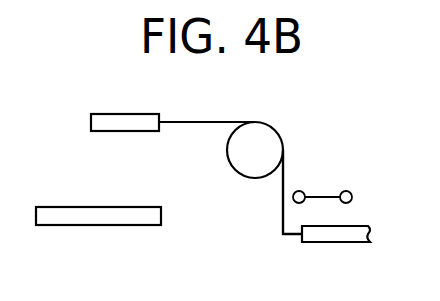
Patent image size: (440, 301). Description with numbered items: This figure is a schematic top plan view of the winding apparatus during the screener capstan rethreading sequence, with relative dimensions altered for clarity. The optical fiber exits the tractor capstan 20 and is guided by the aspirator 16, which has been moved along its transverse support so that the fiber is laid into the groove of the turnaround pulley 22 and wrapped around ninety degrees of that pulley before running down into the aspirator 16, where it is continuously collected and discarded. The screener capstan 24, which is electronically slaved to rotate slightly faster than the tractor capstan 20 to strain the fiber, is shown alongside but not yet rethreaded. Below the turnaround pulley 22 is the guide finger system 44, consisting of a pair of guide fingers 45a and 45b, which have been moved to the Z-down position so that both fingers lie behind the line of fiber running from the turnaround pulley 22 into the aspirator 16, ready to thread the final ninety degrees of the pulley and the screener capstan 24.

The aspirator 16 is at (340, 242).
The tractor capstan 20 is at (106, 131).
The turnaround pulley 22 is at (267, 138).
The screener capstan 24 is at (88, 225).
The guide finger system 44 is at (322, 197).
The first guide finger 45a is at (298, 190).
The second guide finger 45b is at (353, 197).